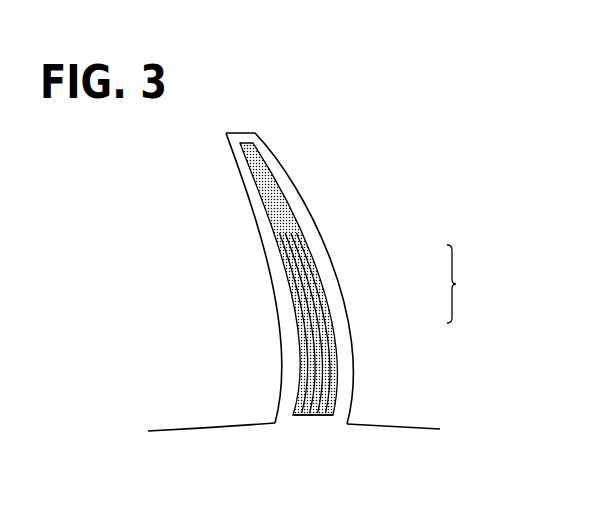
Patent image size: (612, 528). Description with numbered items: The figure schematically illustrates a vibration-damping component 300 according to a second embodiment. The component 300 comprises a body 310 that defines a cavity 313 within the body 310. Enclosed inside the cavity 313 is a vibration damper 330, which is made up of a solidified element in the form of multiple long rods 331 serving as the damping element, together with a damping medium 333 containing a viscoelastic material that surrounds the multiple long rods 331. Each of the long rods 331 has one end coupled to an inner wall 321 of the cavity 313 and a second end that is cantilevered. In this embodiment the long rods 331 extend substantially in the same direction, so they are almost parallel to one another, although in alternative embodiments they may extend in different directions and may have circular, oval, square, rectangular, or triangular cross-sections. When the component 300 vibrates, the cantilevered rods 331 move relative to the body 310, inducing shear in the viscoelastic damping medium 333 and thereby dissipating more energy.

The vibration-damping component 300 is at (387, 88).
The body 310 is at (245, 182).
The cavity 313 is at (280, 223).
The inner wall 321 is at (310, 417).
The vibration damper 330 is at (478, 284).
The multiple long rods 331 is at (307, 337).
The damping medium 333 is at (322, 285).